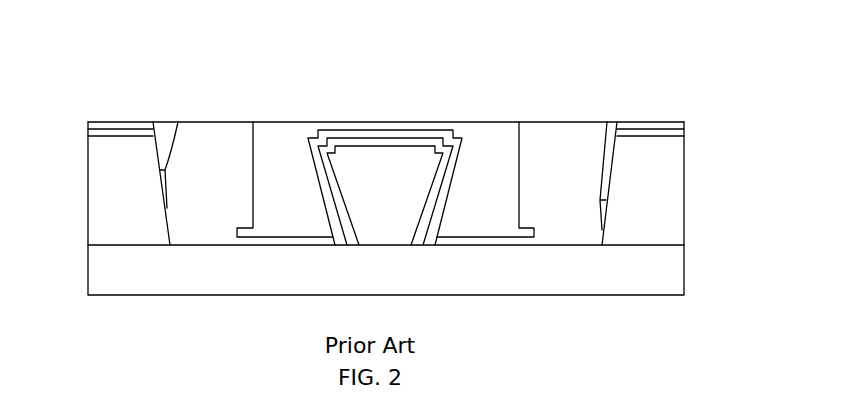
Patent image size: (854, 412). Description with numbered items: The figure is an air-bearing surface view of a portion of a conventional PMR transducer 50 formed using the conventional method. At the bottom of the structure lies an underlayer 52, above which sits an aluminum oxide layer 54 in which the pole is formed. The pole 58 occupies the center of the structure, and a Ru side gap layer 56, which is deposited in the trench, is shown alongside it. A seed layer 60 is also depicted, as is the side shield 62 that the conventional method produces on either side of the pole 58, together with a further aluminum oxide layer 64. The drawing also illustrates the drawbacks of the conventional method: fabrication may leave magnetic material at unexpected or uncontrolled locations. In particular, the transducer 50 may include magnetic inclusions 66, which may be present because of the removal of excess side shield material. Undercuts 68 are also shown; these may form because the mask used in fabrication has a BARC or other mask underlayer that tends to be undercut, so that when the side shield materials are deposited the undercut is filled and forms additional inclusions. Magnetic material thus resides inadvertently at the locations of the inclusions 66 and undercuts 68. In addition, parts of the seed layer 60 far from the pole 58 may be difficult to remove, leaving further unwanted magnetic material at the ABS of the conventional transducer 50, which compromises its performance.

The conventional PMR transducer 50 is at (384, 56).
The underlayer 52 is at (88, 264).
The aluminum oxide layer 54 is at (87, 196).
The Ru side gap layer 56 is at (445, 178).
The pole 58 is at (372, 146).
The seed layer 60 is at (387, 131).
The side shield 62 is at (519, 160).
The aluminum oxide layer 64 is at (187, 122).
The magnetic inclusions 66 is at (178, 122).
The undercuts 68 is at (246, 249).